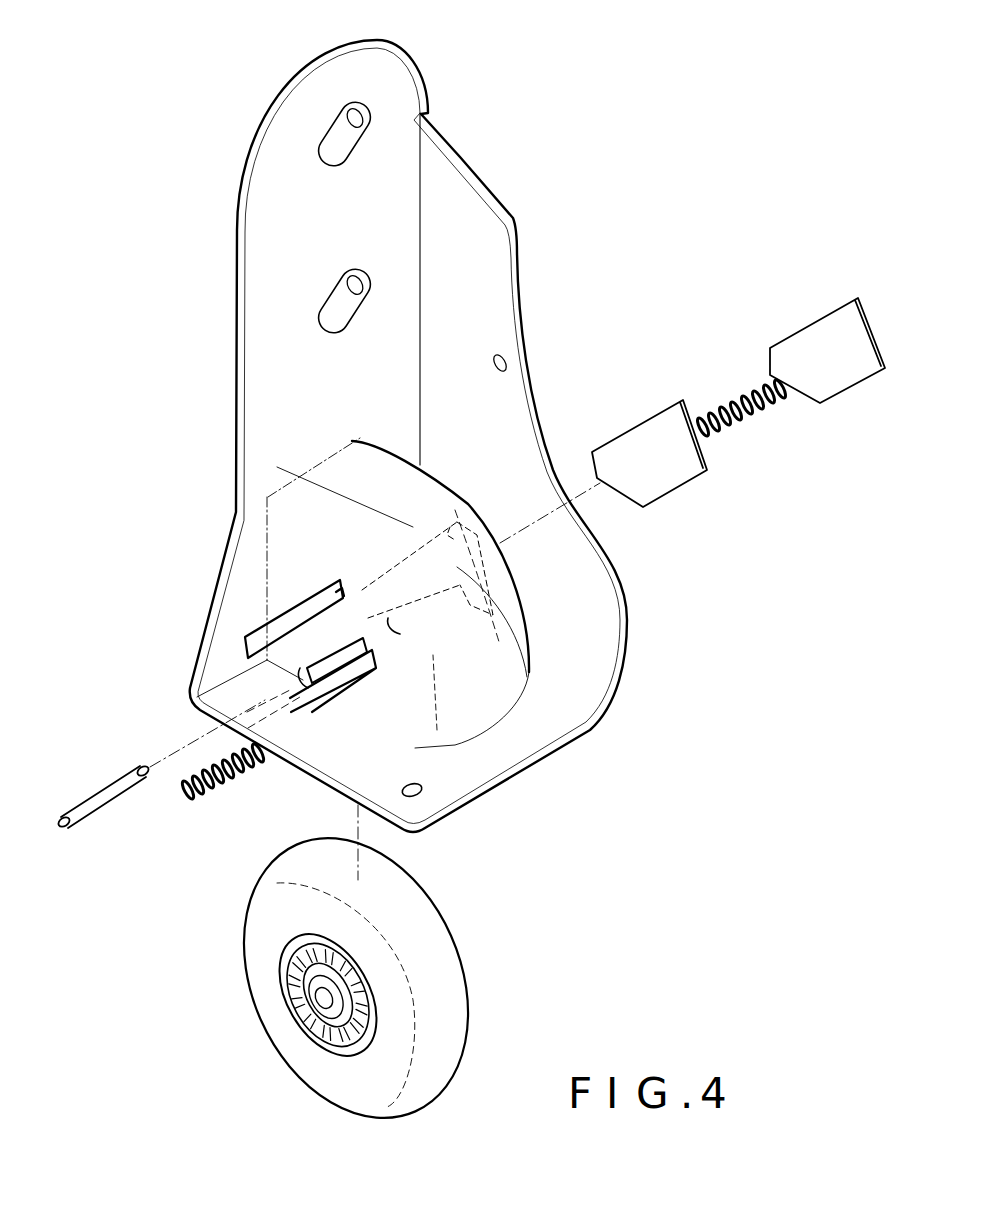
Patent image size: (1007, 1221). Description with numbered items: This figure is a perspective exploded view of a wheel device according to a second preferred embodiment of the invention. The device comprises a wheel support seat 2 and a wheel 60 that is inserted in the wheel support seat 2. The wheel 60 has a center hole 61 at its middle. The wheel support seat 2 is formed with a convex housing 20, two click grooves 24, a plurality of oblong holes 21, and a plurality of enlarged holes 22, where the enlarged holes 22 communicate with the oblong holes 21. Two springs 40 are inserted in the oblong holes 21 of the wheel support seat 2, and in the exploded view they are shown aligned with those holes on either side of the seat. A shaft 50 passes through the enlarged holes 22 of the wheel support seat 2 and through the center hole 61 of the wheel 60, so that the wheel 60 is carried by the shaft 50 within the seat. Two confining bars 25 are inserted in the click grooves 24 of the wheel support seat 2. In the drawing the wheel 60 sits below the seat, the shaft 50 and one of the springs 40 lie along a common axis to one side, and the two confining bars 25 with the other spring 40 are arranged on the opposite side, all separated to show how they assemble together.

The wheel support seat 2 is at (627, 647).
The convex housing 20 is at (430, 492).
The oblong holes 21 is at (345, 663).
The enlarged holes 22 is at (303, 676).
The click grooves 24 is at (305, 612).
The confining bars 25 is at (633, 438).
The springs 40 is at (212, 797).
The shaft 50 is at (82, 800).
The wheel 60 is at (280, 1033).
The center hole 61 is at (323, 1007).